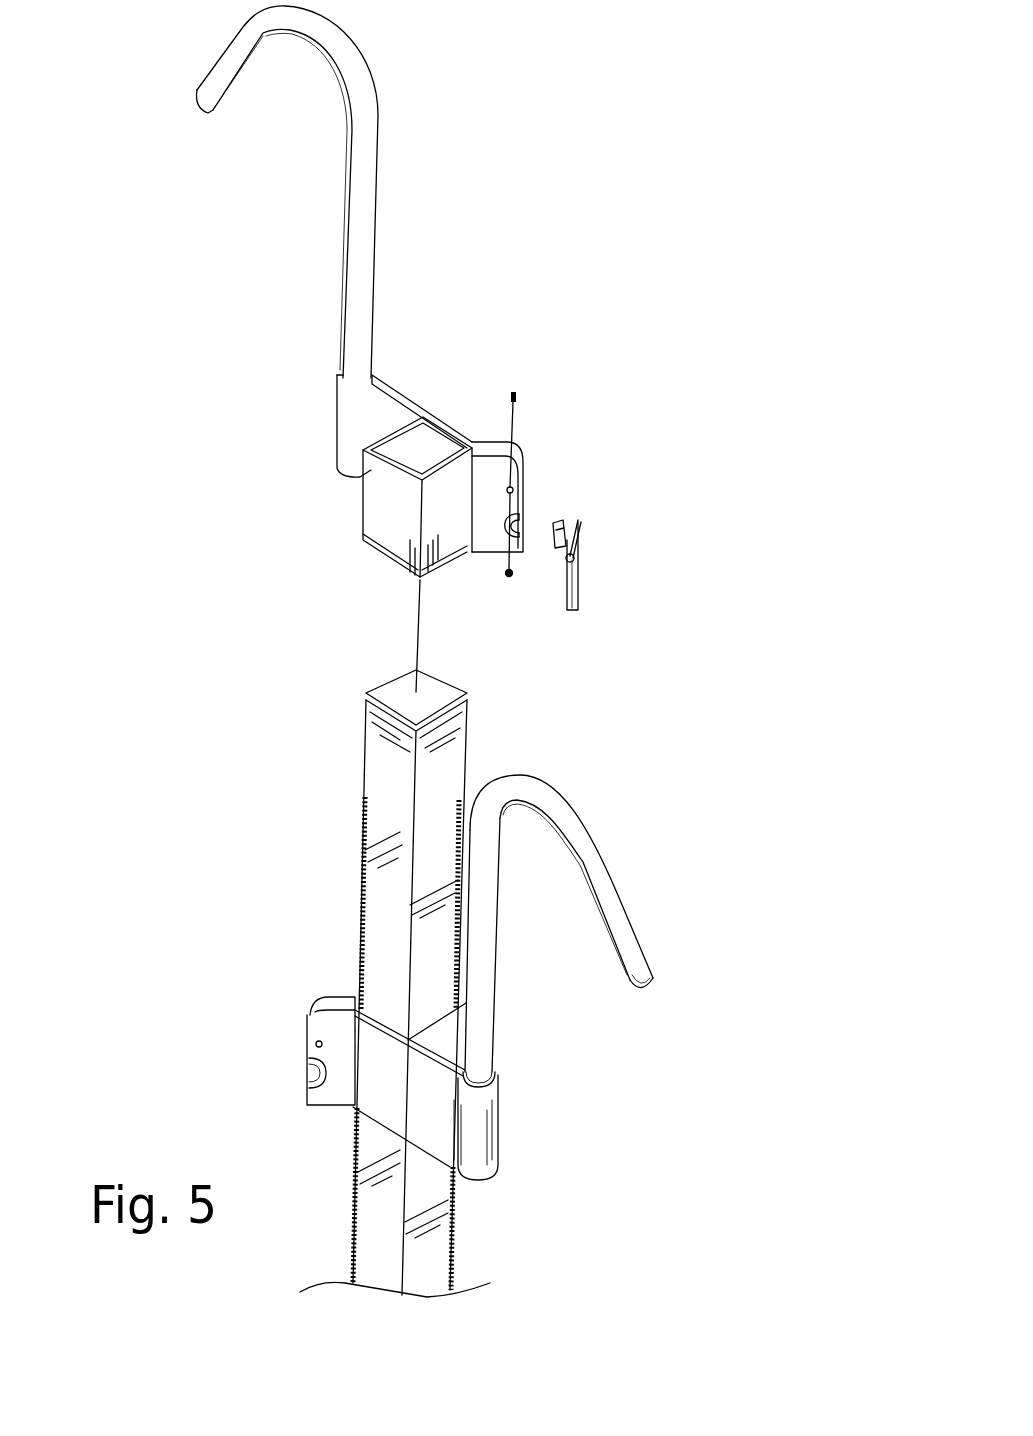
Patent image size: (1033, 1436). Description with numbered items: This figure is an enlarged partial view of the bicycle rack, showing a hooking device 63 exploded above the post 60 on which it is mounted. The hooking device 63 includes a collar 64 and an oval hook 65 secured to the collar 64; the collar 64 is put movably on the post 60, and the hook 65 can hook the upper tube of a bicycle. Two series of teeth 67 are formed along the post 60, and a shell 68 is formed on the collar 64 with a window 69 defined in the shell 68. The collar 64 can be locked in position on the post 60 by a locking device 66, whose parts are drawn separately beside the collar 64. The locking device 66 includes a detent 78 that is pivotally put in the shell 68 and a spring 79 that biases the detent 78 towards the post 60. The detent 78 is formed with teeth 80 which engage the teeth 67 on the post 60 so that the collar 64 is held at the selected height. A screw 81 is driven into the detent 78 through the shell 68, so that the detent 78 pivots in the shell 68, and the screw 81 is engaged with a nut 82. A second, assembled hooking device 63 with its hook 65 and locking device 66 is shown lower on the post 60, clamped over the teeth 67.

The post 60 is at (378, 762).
The hooking device 63 is at (500, 167).
The collar 64 is at (380, 509).
The hook 65 is at (348, 57).
The locking device 66 is at (707, 375).
The teeth 67 is at (362, 862).
The shell 68 is at (485, 445).
The window 69 is at (519, 511).
The detent 78 is at (578, 590).
The spring 79 is at (580, 534).
The teeth 80 is at (555, 535).
The screw 81 is at (516, 396).
The nut 82 is at (512, 578).